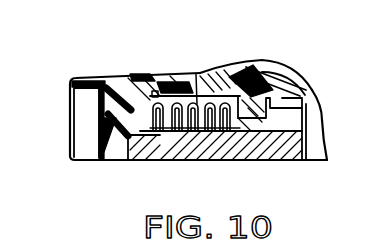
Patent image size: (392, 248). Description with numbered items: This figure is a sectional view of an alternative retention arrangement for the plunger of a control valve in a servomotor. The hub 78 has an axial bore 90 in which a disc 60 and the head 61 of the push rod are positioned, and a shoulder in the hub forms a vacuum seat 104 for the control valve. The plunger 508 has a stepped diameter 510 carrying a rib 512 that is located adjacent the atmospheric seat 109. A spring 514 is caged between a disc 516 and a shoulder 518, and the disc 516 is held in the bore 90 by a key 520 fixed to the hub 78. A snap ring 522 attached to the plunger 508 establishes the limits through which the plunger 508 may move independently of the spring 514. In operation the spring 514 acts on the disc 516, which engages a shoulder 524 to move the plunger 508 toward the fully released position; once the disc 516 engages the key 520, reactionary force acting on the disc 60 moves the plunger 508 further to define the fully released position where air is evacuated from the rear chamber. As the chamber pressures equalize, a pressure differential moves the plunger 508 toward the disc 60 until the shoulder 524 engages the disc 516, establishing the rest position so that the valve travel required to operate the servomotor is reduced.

The disc 60 is at (107, 156).
The head 61 is at (83, 100).
The hub 78 is at (110, 80).
The axial bore 90 is at (197, 72).
The vacuum seat 104 is at (308, 90).
The atmospheric seat 109 is at (322, 104).
The plunger 508 is at (285, 152).
The stepped diameter 510 is at (140, 149).
The rib 512 is at (305, 100).
The spring 514 is at (158, 91).
The disc 516 is at (206, 77).
The shoulder 518 is at (155, 92).
The key 520 is at (236, 72).
The snap ring 522 is at (178, 136).
The shoulder 524 is at (255, 122).